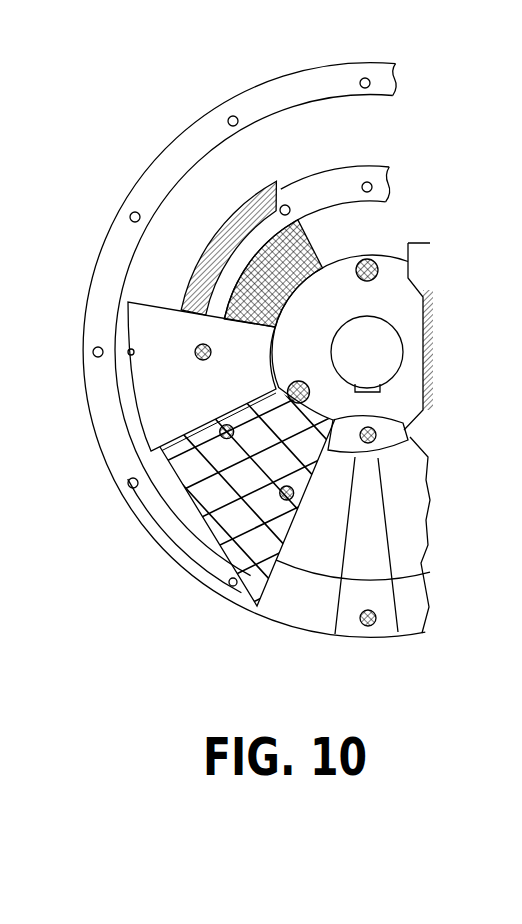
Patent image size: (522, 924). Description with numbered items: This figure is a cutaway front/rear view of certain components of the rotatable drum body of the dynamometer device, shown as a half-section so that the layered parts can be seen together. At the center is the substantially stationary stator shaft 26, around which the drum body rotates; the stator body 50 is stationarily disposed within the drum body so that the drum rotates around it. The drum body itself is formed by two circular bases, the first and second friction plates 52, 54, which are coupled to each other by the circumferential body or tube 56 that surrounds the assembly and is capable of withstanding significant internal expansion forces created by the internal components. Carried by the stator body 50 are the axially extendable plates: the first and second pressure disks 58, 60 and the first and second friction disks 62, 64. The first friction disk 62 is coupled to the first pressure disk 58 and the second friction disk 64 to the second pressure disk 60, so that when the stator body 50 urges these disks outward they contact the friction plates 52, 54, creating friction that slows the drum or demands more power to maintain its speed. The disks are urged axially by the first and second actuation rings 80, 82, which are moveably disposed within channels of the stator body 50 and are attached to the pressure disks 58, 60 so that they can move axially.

The stator shaft 26 is at (390, 355).
The stator body 50 is at (257, 196).
The first friction plate 52 is at (353, 546).
The second friction plate 54 is at (297, 613).
The circumferential body 56 is at (295, 90).
The first pressure disk 58 is at (148, 363).
The second pressure disk 60 is at (140, 400).
The first friction disk 62 is at (256, 480).
The second friction disk 64 is at (200, 492).
The first actuation ring 80 is at (179, 216).
The second actuation ring 82 is at (230, 253).